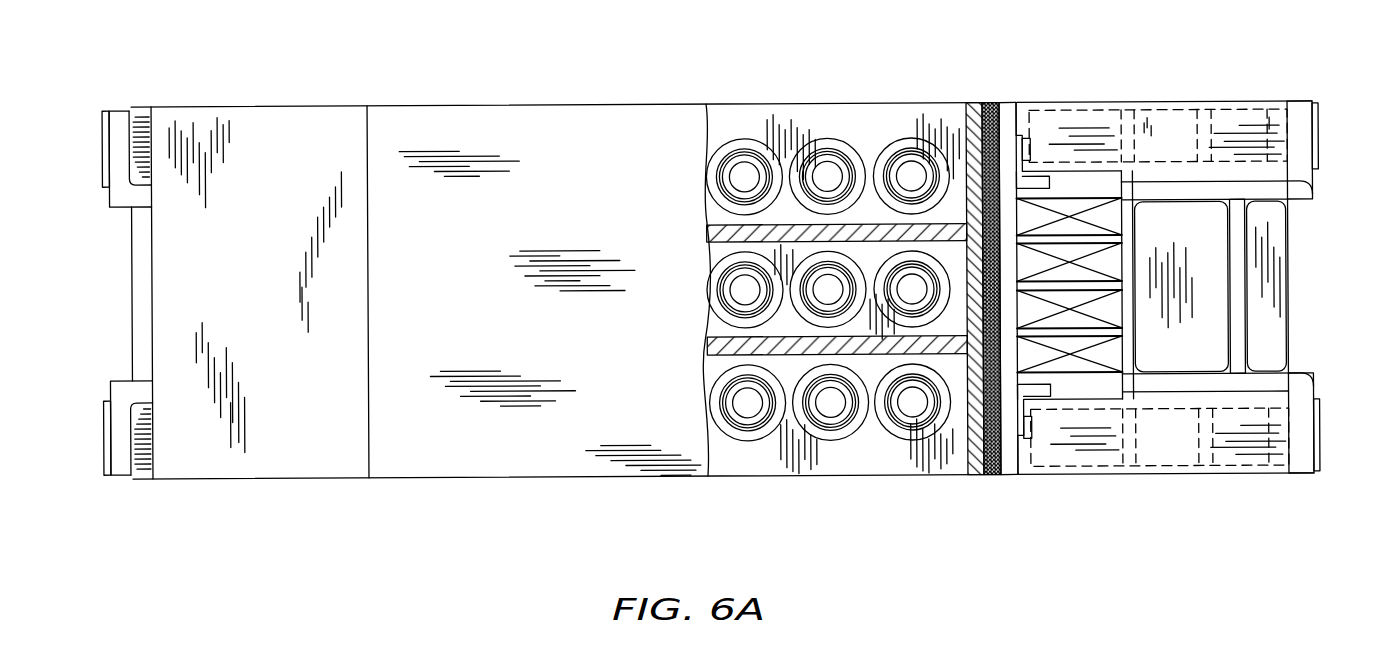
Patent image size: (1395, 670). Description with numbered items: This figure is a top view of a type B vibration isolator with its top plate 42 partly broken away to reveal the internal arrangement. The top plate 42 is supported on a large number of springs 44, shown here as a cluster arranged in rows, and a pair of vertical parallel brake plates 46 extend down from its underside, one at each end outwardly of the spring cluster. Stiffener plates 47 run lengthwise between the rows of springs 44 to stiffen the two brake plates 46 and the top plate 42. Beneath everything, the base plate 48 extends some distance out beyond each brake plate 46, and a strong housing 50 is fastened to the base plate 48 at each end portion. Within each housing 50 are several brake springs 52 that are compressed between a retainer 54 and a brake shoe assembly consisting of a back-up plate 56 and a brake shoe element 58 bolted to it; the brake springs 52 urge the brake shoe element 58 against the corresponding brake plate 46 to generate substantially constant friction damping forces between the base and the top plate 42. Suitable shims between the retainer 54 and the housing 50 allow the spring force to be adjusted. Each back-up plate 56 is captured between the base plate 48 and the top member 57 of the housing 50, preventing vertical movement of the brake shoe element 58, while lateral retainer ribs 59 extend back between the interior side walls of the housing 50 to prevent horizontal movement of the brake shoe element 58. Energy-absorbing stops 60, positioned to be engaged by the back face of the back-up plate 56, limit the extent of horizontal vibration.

The top plate 42 is at (543, 104).
The springs 44 is at (898, 143).
The brake plates 46 is at (972, 450).
The stiffener plates 47 is at (772, 343).
The base plate 48 is at (750, 113).
The housing 50 is at (246, 94).
The brake springs 52 is at (1112, 260).
The retainer 54 is at (105, 197).
The back-up plate 56 is at (1009, 115).
The top member 57 is at (262, 467).
The brake shoe element 58 is at (991, 113).
The lateral retainer ribs 59 is at (1048, 186).
The energy-absorbing stops 60 is at (1027, 145).